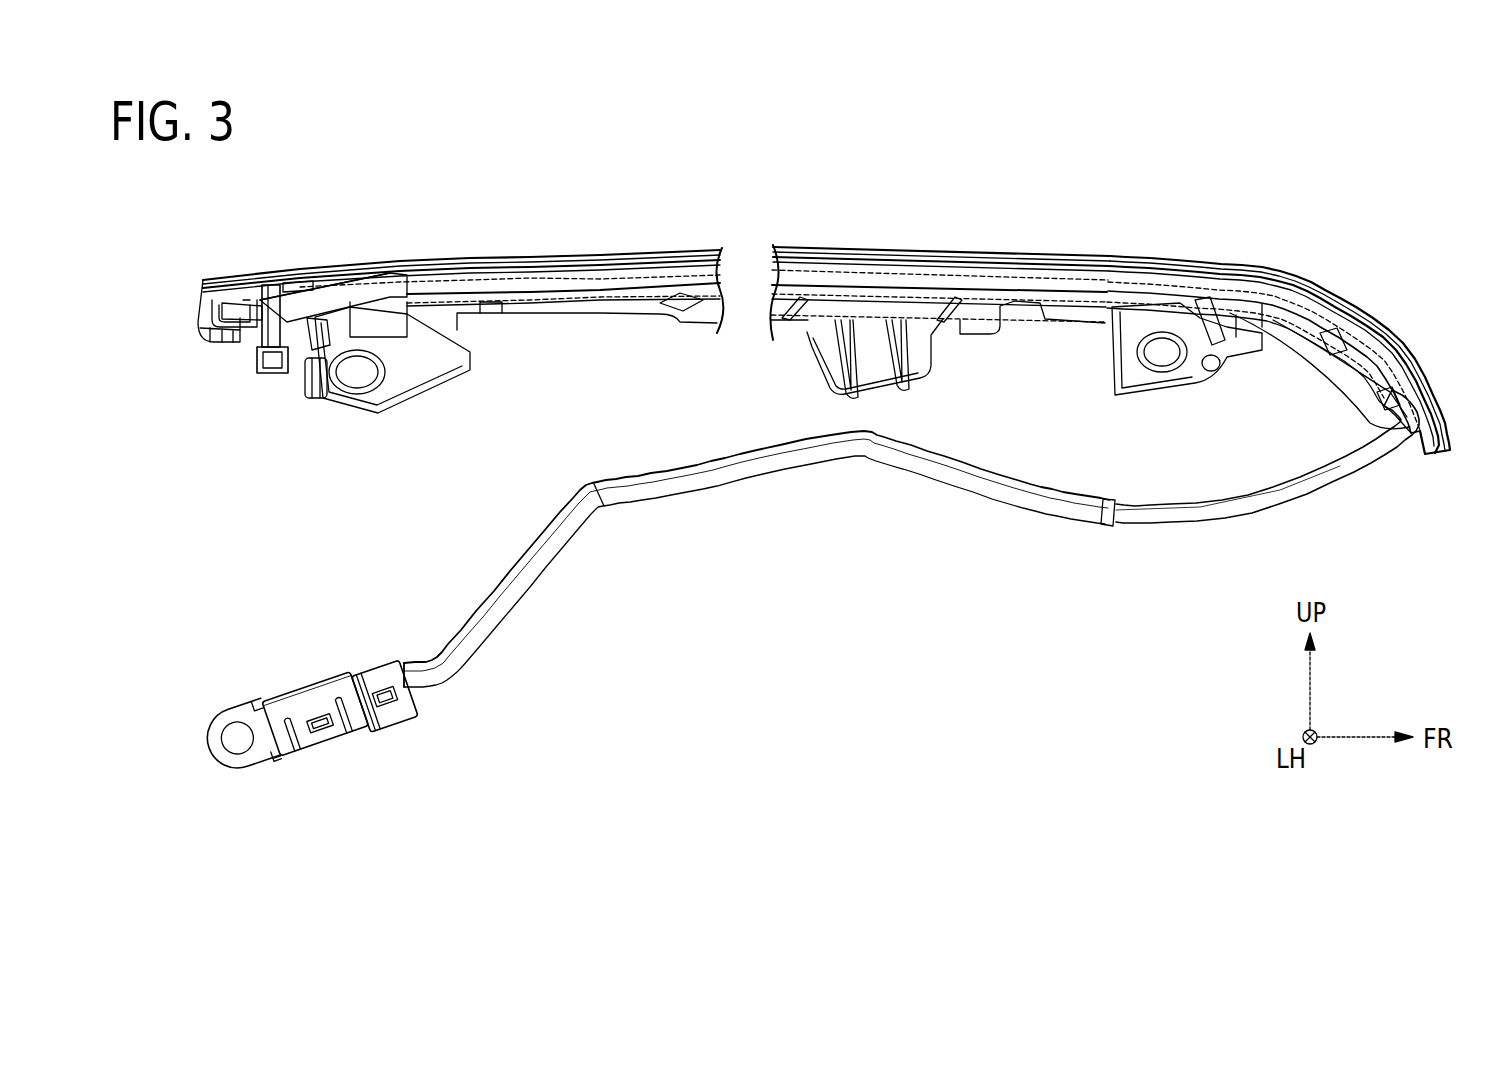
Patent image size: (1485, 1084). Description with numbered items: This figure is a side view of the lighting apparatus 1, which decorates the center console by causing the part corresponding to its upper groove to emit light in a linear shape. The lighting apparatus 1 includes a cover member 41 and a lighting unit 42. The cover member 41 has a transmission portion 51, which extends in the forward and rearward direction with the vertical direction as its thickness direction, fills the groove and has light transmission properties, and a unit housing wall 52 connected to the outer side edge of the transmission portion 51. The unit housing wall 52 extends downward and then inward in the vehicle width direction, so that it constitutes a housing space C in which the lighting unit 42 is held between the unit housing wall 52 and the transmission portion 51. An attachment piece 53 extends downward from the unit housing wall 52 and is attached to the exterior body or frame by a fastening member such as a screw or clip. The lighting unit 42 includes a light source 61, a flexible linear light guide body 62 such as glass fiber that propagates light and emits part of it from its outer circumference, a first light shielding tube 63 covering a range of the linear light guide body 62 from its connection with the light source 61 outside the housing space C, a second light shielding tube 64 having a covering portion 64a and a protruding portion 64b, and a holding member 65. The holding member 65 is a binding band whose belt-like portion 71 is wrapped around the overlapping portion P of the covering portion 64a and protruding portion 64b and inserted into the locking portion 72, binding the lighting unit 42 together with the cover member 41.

The lighting apparatus 1 is at (813, 324).
The cover member 41 is at (1430, 351).
The lighting unit 42 is at (1368, 480).
The transmission portion 51 is at (560, 253).
The unit housing wall 52 is at (207, 312).
The attachment piece 53 is at (410, 400).
The light source 61 is at (300, 688).
The linear light guide body 62 is at (1303, 507).
The first light shielding tube 63 is at (1018, 518).
The second light shielding tube 64 is at (317, 314).
The covering portion 64a is at (375, 276).
The protruding portion 64b is at (303, 283).
The holding member 65 is at (280, 375).
The belt-like portion 71 is at (272, 286).
The locking portion 72 is at (270, 375).
The overlapping portion P is at (256, 291).
The housing space C is at (572, 286).